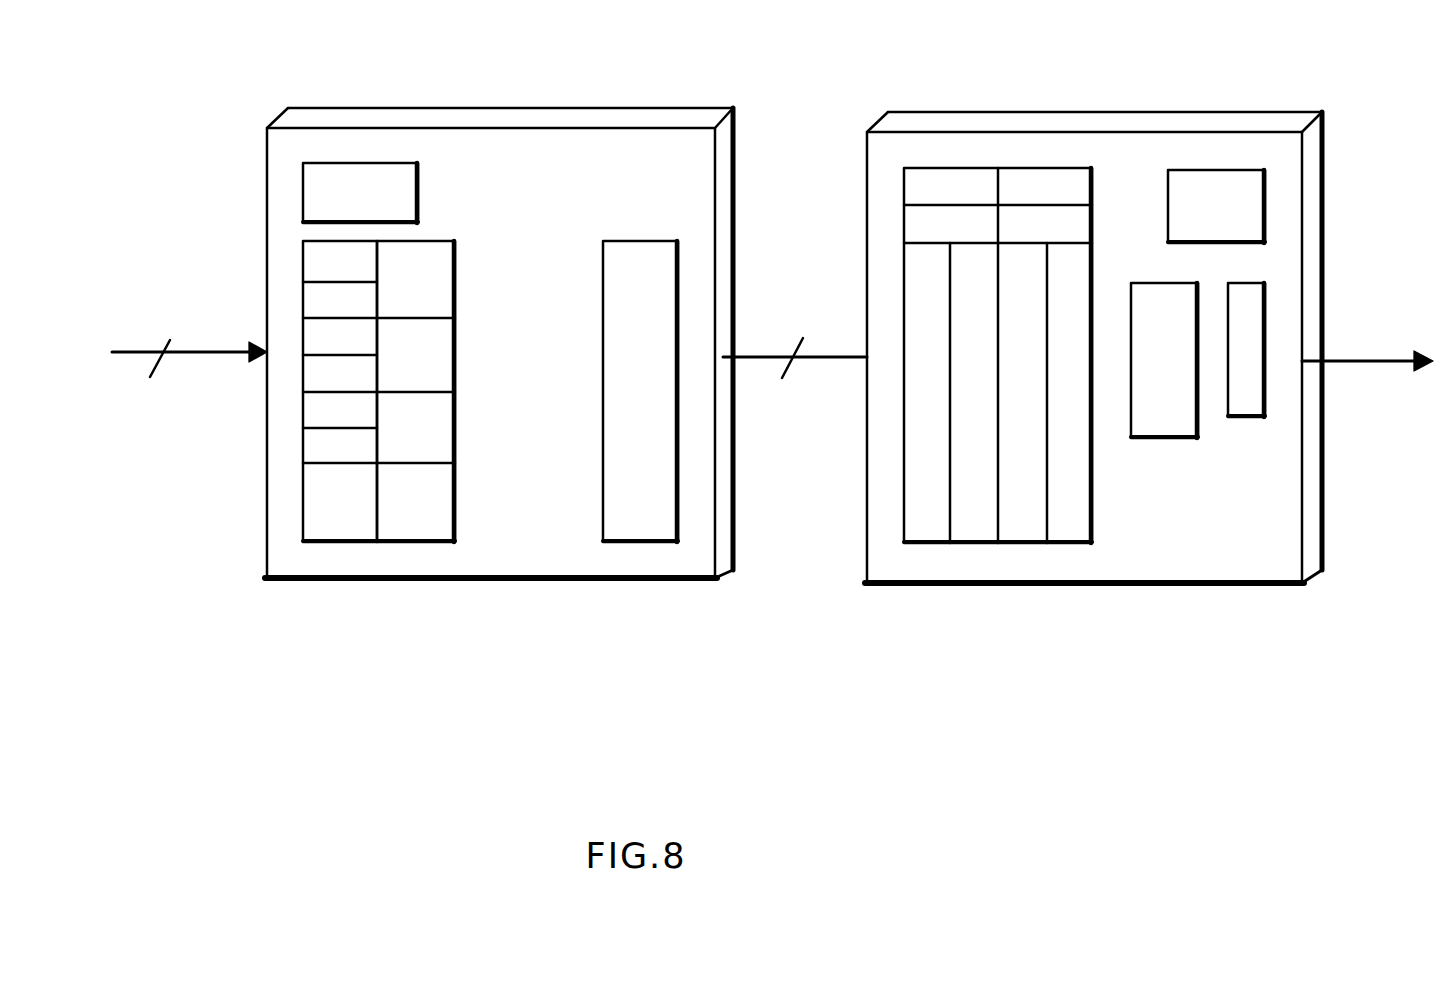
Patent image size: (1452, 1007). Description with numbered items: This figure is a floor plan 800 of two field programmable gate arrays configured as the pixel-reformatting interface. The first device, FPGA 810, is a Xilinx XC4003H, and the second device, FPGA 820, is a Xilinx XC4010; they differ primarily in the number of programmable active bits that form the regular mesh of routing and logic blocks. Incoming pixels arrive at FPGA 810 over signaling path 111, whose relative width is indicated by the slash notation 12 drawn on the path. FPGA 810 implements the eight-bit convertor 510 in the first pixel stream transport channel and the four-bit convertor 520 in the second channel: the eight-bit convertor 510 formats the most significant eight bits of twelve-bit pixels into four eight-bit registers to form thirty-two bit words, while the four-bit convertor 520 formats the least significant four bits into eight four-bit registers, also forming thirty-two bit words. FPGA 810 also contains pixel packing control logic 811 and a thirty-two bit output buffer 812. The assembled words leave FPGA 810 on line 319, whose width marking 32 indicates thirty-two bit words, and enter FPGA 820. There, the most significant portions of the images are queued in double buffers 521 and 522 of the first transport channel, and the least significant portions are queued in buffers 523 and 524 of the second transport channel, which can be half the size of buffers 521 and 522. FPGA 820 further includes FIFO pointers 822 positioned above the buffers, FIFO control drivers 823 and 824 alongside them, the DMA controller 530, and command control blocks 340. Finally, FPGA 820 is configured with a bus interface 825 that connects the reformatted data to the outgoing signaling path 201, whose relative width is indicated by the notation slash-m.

The data reformatting system 800 is at (834, 668).
The FPGA 810 is at (486, 120).
The pixel packing control logic 811 is at (356, 163).
The 32 bit output buffer 812 is at (645, 545).
The 8 bit convertor 510 is at (340, 545).
The 4 bit convertor 520 is at (430, 545).
The signaling path 111 is at (219, 352).
The input data bus 12 is at (172, 367).
The line 319 is at (778, 356).
The link bus 32 is at (807, 366).
The FPGA 820 is at (1072, 118).
The FIFO pointer 822 is at (962, 168).
The FIFO control driver 823 is at (904, 231).
The FIFO control driver 824 is at (1094, 223).
The double buffer 521 is at (930, 545).
The double buffer 523 is at (985, 545).
The double buffer 522 is at (1025, 545).
The double buffer 524 is at (1068, 545).
The DMA controller 530 is at (1207, 168).
The command control blocks 340 is at (1168, 440).
The bus interface 825 is at (1245, 418).
The signaling path 201 is at (1370, 362).